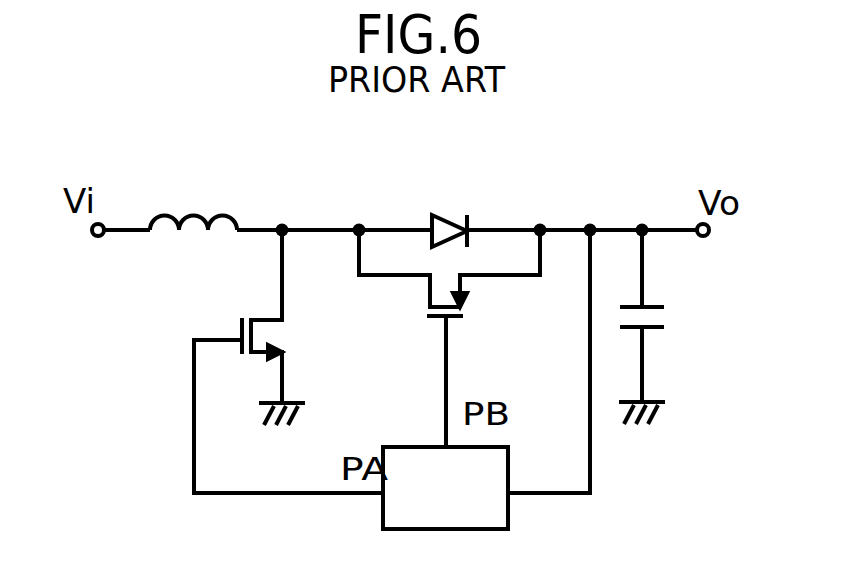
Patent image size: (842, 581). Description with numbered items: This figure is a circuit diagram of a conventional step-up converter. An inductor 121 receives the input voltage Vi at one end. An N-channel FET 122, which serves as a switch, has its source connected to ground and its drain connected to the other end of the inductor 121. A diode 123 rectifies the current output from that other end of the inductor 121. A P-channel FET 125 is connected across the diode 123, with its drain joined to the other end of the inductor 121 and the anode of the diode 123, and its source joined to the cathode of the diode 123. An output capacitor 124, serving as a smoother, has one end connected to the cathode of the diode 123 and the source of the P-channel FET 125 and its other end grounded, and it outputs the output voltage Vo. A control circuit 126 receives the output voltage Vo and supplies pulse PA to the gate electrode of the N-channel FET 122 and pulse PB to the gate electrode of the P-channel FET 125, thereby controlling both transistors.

The inductor 121 is at (230, 212).
The N-channel FET 122 is at (237, 325).
The diode 123 is at (467, 215).
The output capacitor 124 is at (663, 327).
The P-channel FET 125 is at (467, 283).
The control circuit 126 is at (398, 445).